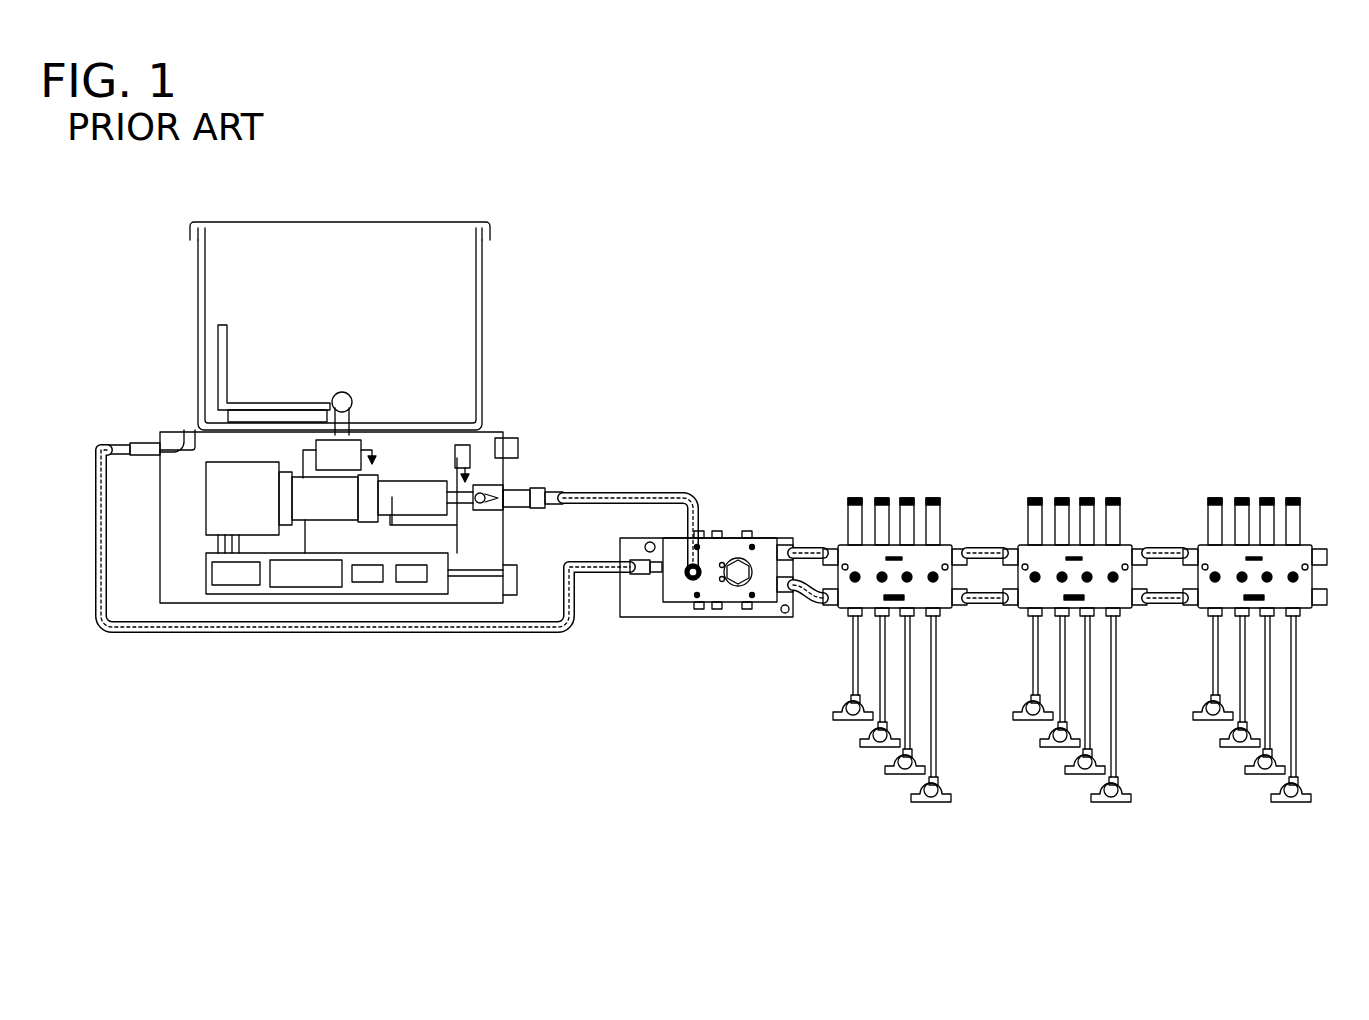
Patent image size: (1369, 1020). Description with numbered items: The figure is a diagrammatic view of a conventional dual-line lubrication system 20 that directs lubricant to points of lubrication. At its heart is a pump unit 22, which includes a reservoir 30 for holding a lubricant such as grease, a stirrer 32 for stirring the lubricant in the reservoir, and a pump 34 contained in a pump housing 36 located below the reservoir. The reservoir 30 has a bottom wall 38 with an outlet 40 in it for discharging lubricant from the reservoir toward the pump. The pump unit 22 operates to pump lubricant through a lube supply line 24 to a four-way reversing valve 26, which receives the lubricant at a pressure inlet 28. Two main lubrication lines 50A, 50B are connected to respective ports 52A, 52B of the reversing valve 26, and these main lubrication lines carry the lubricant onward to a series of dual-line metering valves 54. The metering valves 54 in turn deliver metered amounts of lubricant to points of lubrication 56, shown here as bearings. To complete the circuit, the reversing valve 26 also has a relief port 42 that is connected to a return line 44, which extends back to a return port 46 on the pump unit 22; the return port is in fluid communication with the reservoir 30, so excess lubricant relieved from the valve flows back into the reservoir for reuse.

The dual-line lubrication system 20 is at (763, 282).
The pump unit 22 is at (345, 326).
The lube supply line 24 is at (610, 492).
The four-way reversing valve 26 is at (719, 578).
The pressure inlet 28 is at (682, 602).
The reservoir 30 is at (198, 290).
The stirrer 32 is at (228, 362).
The pump 34 is at (475, 486).
The pump housing 36 is at (515, 470).
The bottom wall 38 is at (378, 425).
The outlet 40 is at (410, 440).
The relief port 42 is at (640, 600).
The return line 44 is at (288, 632).
The return port 46 is at (200, 438).
The main lubrication line 50A is at (805, 545).
The main lubrication line 50B is at (808, 605).
The port 52A is at (783, 536).
The port 52B is at (783, 614).
The dual-line metering valves 54 is at (945, 540).
The points of lubrication 56 is at (930, 800).